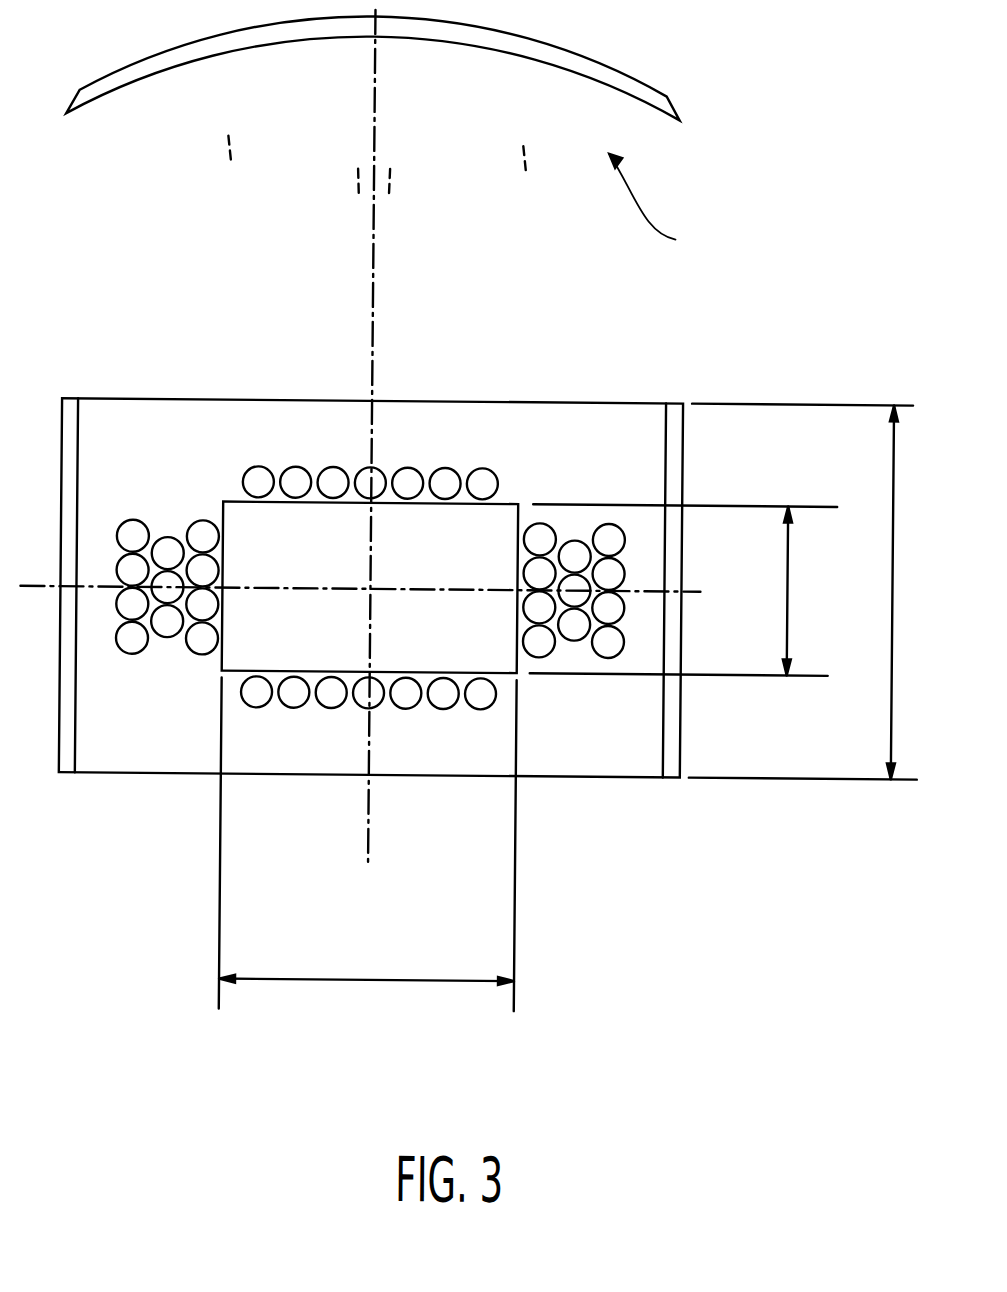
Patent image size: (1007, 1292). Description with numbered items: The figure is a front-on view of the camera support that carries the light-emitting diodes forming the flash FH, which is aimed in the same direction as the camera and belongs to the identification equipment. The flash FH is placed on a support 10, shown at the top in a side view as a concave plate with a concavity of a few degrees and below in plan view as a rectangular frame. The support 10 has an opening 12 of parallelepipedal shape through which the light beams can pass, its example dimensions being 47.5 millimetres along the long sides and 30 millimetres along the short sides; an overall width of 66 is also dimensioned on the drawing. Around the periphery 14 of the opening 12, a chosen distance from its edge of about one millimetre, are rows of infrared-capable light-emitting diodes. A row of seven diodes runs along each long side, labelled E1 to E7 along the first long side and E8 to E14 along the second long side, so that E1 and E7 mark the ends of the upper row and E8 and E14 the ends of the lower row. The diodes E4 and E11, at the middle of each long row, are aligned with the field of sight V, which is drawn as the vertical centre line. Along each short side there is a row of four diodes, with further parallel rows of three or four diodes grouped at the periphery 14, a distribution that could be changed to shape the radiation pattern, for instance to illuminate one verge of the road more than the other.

The support 10 is at (663, 93).
The opening 12 is at (423, 184).
The periphery 14 is at (215, 507).
The field of sight V is at (370, 52).
The flash FH is at (664, 206).
The light-emitting diode E1 is at (257, 469).
The light-emitting diode E4 is at (368, 469).
The light-emitting diode E7 is at (481, 469).
The light-emitting diode E8 is at (255, 709).
The light-emitting diode E11 is at (375, 709).
The light-emitting diode E14 is at (486, 710).
The opening dimension 30 is at (786, 611).
The dimension 66 is at (891, 636).
The opening dimension 47.5 is at (328, 981).